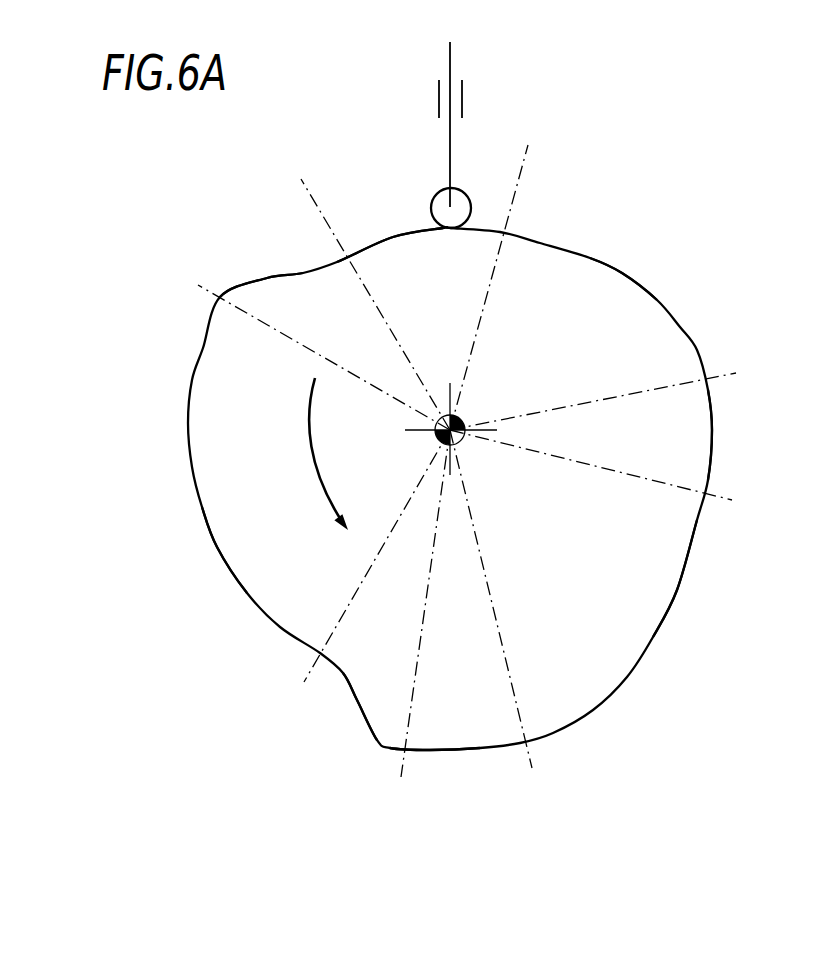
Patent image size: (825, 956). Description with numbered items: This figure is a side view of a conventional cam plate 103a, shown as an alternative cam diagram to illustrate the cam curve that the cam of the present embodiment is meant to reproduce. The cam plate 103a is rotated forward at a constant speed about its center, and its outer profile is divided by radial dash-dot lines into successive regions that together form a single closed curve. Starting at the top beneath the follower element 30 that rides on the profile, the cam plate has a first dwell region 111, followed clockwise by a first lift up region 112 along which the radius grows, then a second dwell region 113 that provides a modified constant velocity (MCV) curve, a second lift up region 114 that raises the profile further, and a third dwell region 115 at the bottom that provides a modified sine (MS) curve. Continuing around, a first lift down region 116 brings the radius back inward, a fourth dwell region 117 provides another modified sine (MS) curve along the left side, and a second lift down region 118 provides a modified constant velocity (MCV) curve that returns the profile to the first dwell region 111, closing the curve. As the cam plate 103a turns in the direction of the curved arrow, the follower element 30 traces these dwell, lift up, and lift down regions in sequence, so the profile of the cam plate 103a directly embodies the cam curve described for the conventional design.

The roller follower 30 is at (462, 206).
The cam plate 103a is at (560, 240).
The first dwell region 111 is at (393, 237).
The first lift up region 112 is at (622, 273).
The second dwell region 113 is at (712, 428).
The second lift up region 114 is at (675, 593).
The third dwell region 115 is at (462, 752).
The first lift down region 116 is at (352, 700).
The fourth dwell region 117 is at (218, 552).
The second lift down region 118 is at (267, 278).